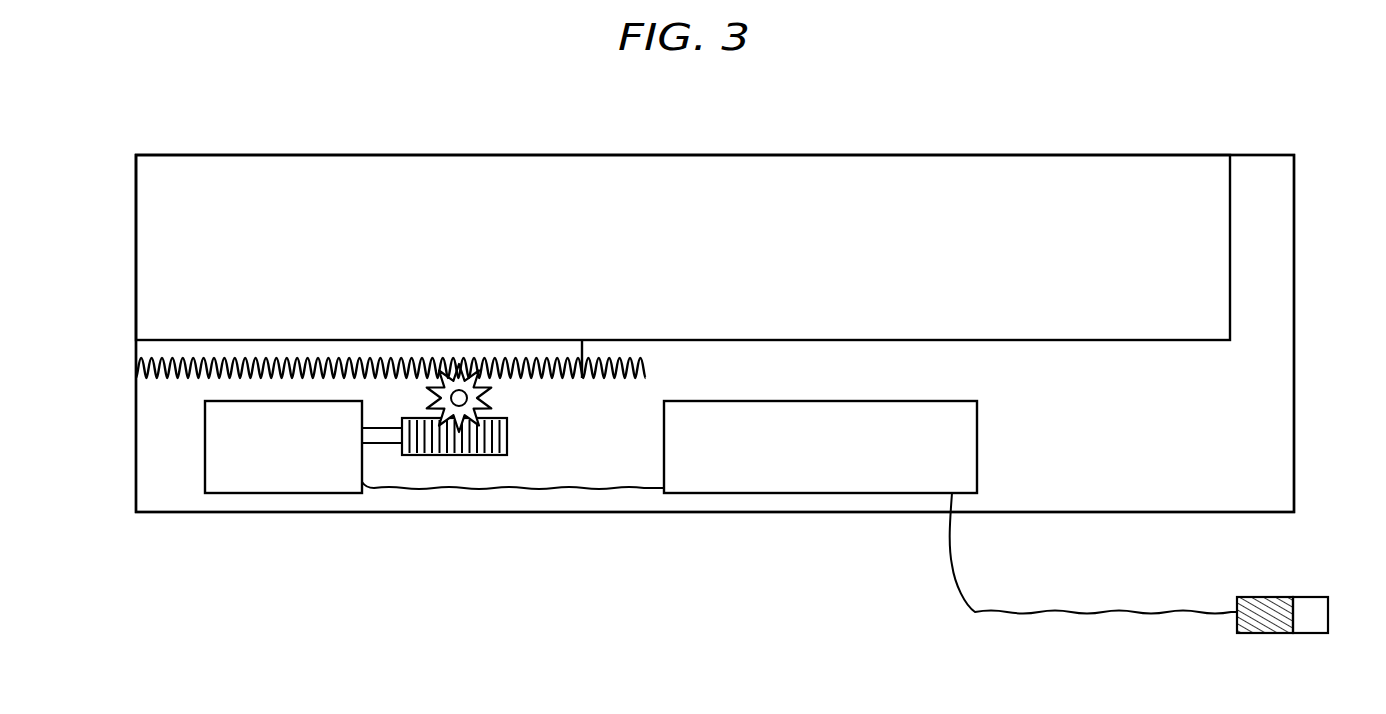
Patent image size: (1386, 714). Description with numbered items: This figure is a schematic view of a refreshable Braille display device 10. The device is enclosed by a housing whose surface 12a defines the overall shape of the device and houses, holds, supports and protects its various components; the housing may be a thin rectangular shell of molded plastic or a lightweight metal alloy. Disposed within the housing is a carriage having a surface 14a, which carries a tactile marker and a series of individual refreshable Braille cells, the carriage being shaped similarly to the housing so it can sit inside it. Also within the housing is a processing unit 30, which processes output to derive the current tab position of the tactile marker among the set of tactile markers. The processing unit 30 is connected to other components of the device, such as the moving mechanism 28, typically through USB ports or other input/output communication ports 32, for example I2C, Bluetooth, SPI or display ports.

The refreshable Braille display device 10 is at (1066, 97).
The surface 12a is at (1153, 436).
The surface 14a is at (701, 260).
The moving mechanism 28 is at (205, 447).
The processing unit 30 is at (833, 459).
The input/output communication port 32 is at (1328, 616).